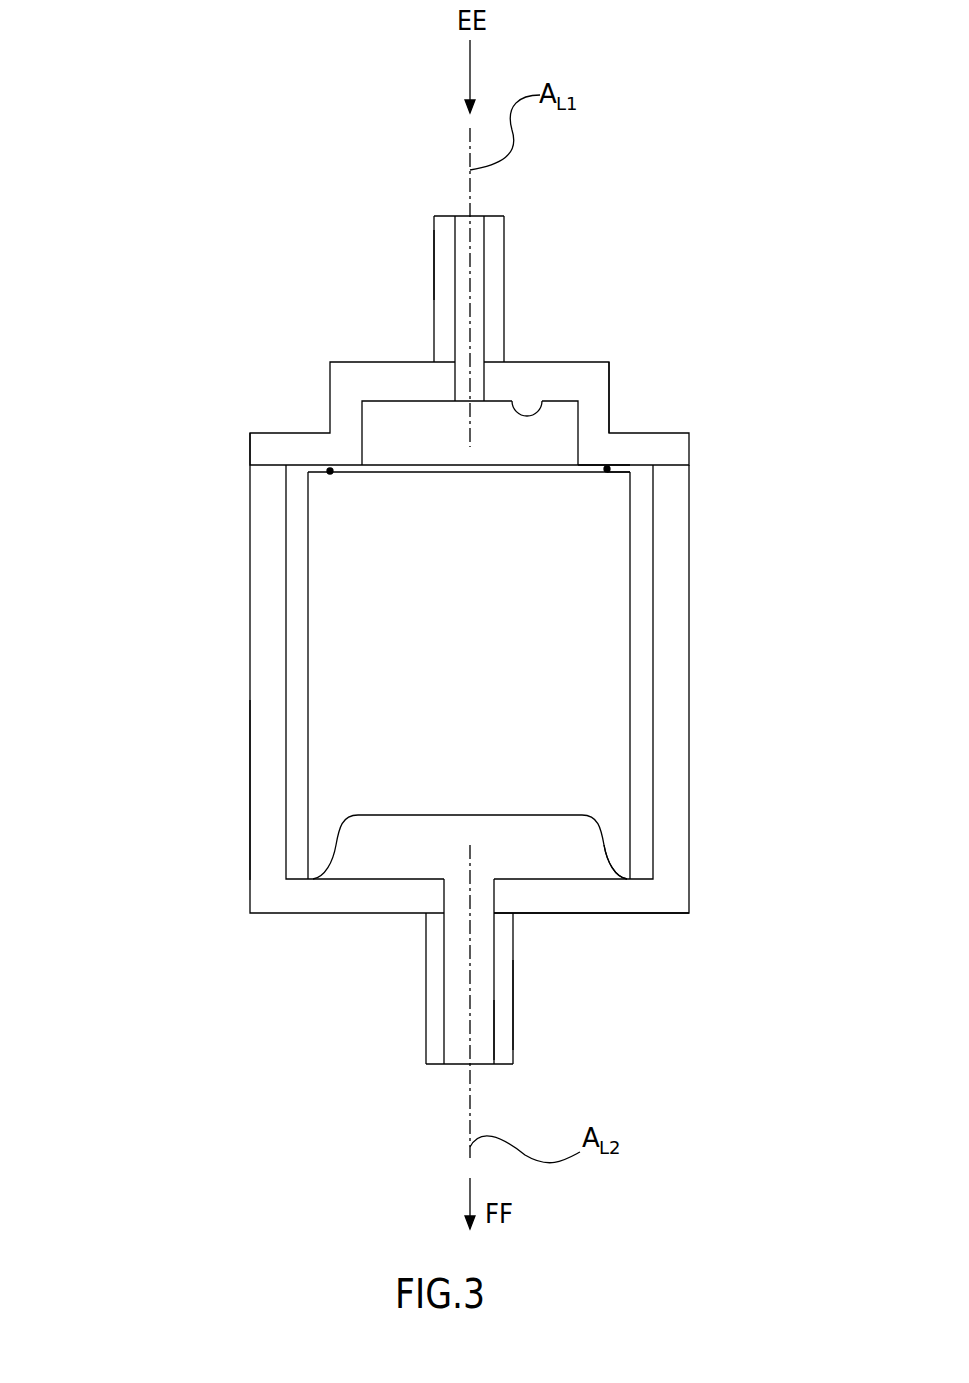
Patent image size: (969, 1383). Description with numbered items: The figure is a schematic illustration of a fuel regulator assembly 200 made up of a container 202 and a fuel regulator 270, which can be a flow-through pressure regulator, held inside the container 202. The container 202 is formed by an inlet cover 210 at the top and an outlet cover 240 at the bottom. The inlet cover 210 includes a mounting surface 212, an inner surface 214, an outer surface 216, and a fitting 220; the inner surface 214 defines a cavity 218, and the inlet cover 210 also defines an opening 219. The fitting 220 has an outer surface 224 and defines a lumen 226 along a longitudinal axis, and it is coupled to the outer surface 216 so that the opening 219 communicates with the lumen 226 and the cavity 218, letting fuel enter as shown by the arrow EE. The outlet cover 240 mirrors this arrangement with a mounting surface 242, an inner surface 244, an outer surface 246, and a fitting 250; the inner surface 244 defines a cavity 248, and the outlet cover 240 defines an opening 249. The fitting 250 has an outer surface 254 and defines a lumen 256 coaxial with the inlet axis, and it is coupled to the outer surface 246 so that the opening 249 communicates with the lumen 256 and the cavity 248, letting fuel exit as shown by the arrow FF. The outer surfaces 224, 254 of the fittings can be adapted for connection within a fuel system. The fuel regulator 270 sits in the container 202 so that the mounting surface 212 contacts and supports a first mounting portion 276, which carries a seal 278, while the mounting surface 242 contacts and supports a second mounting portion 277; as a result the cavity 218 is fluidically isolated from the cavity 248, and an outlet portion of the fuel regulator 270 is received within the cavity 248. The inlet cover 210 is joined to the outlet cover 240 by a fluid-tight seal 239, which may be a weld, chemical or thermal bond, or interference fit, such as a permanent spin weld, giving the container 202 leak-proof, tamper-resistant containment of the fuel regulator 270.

The fuel regulator assembly 200 is at (108, 273).
The container 202 is at (442, 741).
The inlet cover 210 is at (588, 375).
The mounting surface 212 is at (606, 467).
The inner surface 214 is at (530, 416).
The outer surface 216 is at (612, 388).
The cavity 218 is at (386, 420).
The opening 219 is at (462, 378).
The fitting 220 is at (500, 255).
The outer surface 224 is at (434, 240).
The lumen 226 is at (460, 270).
The fluid-tight seal 239 is at (250, 466).
The outlet cover 240 is at (257, 725).
The mounting surface 242 is at (628, 880).
The inner surface 244 is at (285, 672).
The outer surface 246 is at (250, 792).
The cavity 248 is at (398, 852).
The opening 249 is at (482, 902).
The fitting 250 is at (433, 1040).
The outer surface 254 is at (513, 1037).
The lumen 256 is at (483, 1052).
The fuel regulator 270 is at (560, 622).
The first mounting portion 276 is at (608, 473).
The second mounting portion 277 is at (622, 858).
The seal 278 is at (607, 468).